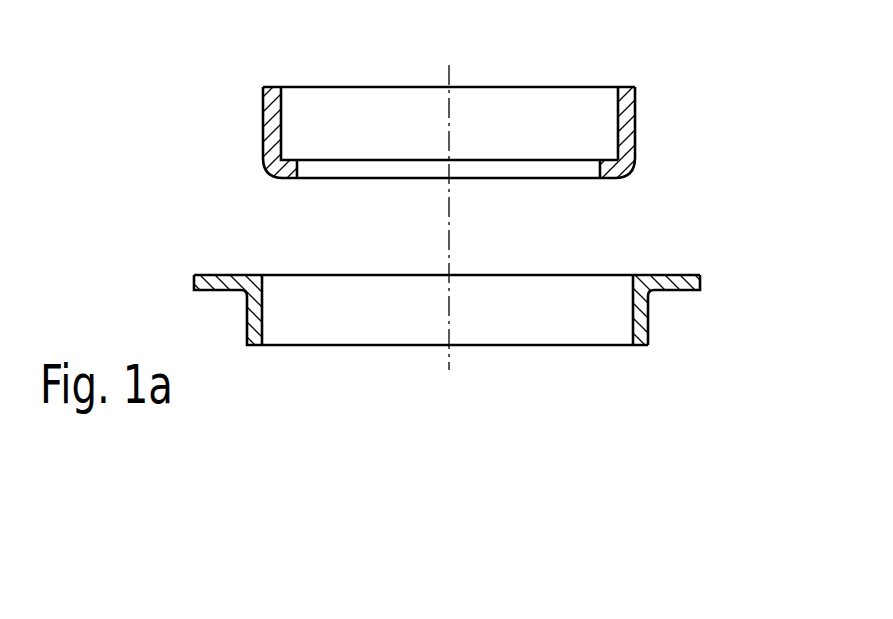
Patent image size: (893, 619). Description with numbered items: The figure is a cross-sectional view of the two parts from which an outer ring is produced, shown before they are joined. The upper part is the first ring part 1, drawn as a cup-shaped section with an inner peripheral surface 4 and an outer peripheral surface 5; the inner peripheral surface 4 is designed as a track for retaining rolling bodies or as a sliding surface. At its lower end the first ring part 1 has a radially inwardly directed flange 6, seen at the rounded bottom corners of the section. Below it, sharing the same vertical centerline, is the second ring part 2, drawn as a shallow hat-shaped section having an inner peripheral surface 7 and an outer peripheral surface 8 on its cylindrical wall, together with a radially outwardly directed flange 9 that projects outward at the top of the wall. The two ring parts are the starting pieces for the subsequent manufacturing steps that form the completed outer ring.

The first ring part 1 is at (626, 103).
The second ring part 2 is at (643, 285).
The inner peripheral surface 4 is at (616, 134).
The outer peripheral surface 5 is at (637, 130).
The radially inwardly directed flange 6 is at (607, 167).
The inner peripheral surface 7 is at (631, 327).
The outer peripheral surface 8 is at (651, 327).
The radially outwardly directed flange 9 is at (658, 281).